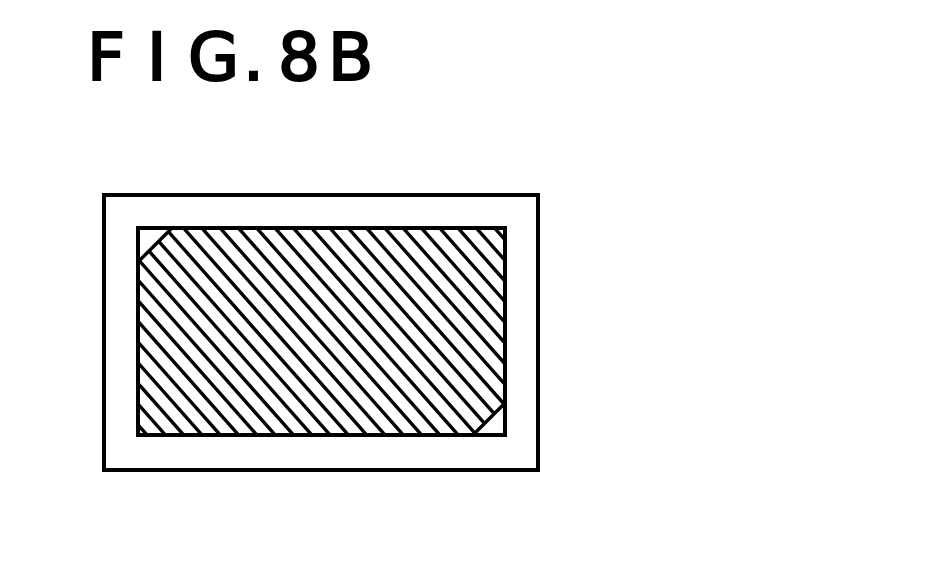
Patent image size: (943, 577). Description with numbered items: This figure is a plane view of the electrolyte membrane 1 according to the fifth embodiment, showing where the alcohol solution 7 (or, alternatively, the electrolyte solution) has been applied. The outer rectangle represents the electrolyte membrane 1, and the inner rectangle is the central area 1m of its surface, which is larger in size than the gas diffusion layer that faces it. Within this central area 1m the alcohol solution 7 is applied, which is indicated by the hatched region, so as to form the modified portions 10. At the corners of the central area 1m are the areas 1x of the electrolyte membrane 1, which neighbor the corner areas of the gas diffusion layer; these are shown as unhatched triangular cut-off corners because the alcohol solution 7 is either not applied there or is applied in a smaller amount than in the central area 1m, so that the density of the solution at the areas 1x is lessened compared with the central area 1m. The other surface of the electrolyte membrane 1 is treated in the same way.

The electrolyte membrane 1 is at (538, 303).
The central area 1m is at (472, 368).
The areas 1x is at (148, 242).
The alcohol solution 7 is at (490, 333).
The modified portions 10 is at (478, 273).